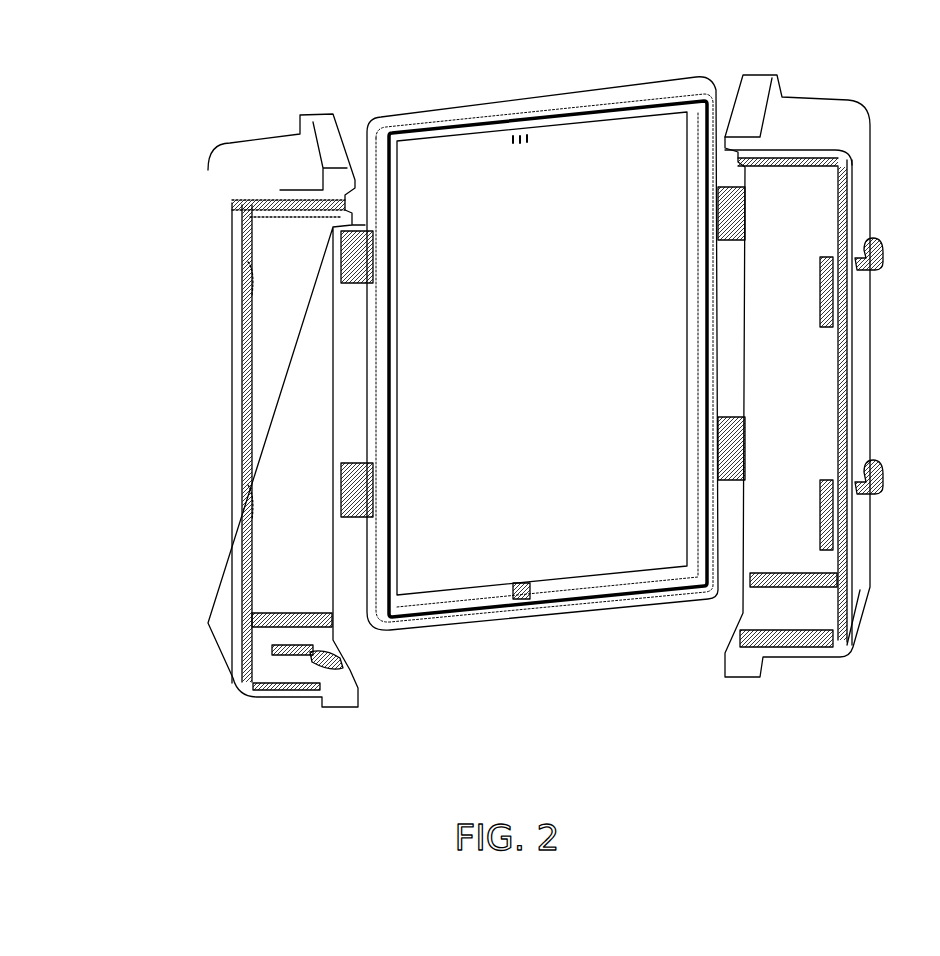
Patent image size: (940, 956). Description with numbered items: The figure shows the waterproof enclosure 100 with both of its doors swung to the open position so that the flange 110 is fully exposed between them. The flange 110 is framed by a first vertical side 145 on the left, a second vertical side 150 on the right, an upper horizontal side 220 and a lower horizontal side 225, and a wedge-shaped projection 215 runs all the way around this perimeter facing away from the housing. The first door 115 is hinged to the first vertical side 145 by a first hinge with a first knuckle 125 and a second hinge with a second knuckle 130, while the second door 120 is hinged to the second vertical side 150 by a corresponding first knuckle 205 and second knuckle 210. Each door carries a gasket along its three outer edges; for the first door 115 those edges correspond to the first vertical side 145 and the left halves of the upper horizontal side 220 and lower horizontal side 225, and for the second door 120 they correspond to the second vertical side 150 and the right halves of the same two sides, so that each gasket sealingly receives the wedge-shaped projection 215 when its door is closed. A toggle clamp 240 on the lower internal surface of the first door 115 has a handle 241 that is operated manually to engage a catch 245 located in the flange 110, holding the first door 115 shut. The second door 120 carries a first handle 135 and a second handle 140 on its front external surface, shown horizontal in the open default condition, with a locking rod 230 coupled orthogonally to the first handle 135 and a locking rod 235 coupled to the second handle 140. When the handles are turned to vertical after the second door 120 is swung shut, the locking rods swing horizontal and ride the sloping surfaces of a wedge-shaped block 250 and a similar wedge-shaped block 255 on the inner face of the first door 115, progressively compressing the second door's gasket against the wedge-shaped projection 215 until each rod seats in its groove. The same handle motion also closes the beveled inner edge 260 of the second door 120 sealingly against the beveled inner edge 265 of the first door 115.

The enclosure 100 is at (212, 713).
The flange 110 is at (542, 345).
The first door 115 is at (212, 447).
The second door 120 is at (872, 351).
The first knuckle 125 is at (338, 256).
The second knuckle 130 is at (342, 493).
The first handle 135 is at (884, 246).
The second handle 140 is at (884, 466).
The first vertical side 145 is at (409, 378).
The second vertical side 150 is at (665, 362).
The first knuckle 205 is at (738, 218).
The second knuckle 210 is at (740, 457).
The wedge-shaped projection 215 is at (445, 132).
The upper horizontal side 220 is at (533, 67).
The lower horizontal side 225 is at (566, 623).
The locking rod 230 is at (818, 305).
The locking rod 235 is at (820, 513).
The toggle clamp 240 is at (353, 661).
The handle 241 is at (282, 642).
The catch 245 is at (524, 566).
The wedge-shaped block 250 is at (258, 293).
The wedge-shaped block 255 is at (258, 516).
The beveled inner edge 260 is at (827, 206).
The beveled inner edge 265 is at (264, 386).